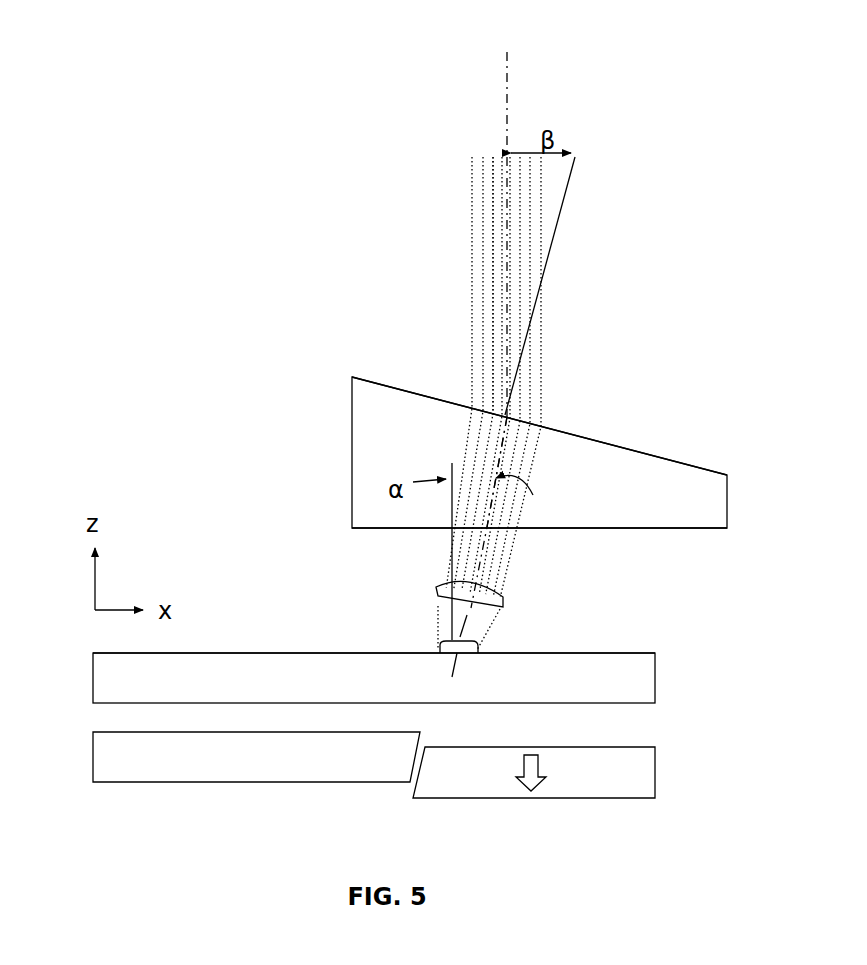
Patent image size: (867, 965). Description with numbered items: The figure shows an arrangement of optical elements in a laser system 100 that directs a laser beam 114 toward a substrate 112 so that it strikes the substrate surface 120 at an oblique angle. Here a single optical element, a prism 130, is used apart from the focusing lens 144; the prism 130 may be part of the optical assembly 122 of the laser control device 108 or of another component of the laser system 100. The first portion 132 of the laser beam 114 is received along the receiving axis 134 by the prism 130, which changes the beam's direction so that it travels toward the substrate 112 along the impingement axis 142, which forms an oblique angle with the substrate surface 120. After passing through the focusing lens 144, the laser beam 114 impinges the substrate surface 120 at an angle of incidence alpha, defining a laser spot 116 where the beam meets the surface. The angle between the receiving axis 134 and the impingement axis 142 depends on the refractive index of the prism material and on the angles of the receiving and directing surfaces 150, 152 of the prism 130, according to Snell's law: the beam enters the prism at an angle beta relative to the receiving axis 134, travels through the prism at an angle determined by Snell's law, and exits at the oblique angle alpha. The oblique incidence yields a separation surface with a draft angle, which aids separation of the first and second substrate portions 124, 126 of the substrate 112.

The laser system 100 is at (211, 136).
The control device 108 is at (268, 250).
The substrate 112 is at (635, 667).
The laser beam 114 is at (470, 197).
The laser spot 116 is at (473, 642).
The substrate surface 120 is at (233, 653).
The optical assembly 122 is at (328, 330).
The first substrate portion 124 is at (93, 675).
The second substrate portion 126 is at (655, 683).
The prism 130 is at (352, 400).
The first portion of the laser beam 132 is at (478, 281).
The receiving axis 134 is at (506, 82).
The impingement axis 142 is at (502, 450).
The focusing lens 144 is at (432, 594).
The receiving surface 150 is at (623, 448).
The directing surface 152 is at (652, 529).